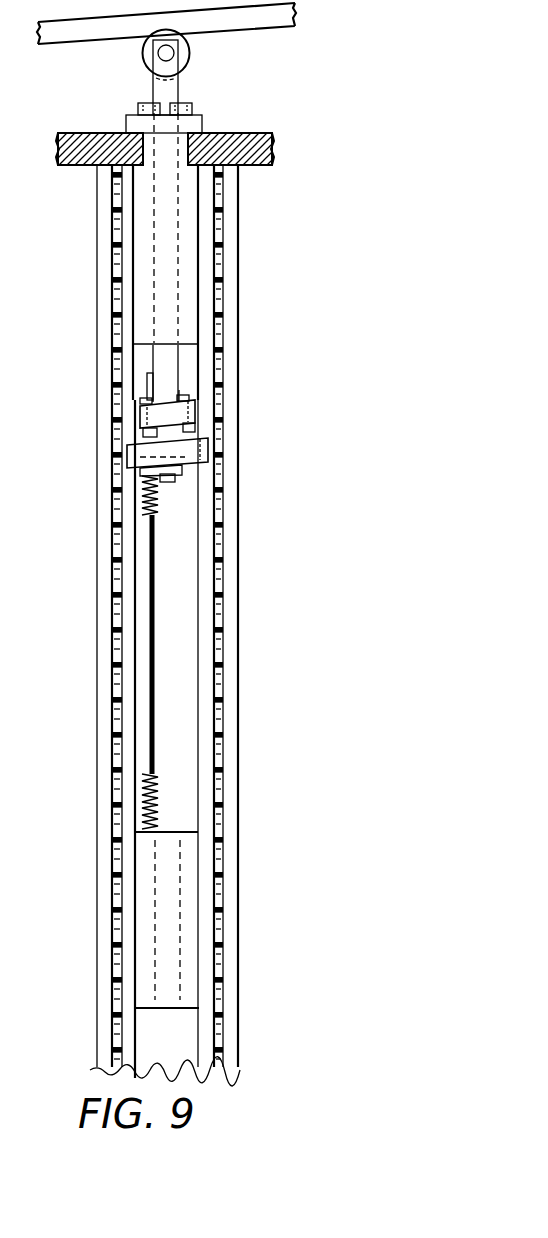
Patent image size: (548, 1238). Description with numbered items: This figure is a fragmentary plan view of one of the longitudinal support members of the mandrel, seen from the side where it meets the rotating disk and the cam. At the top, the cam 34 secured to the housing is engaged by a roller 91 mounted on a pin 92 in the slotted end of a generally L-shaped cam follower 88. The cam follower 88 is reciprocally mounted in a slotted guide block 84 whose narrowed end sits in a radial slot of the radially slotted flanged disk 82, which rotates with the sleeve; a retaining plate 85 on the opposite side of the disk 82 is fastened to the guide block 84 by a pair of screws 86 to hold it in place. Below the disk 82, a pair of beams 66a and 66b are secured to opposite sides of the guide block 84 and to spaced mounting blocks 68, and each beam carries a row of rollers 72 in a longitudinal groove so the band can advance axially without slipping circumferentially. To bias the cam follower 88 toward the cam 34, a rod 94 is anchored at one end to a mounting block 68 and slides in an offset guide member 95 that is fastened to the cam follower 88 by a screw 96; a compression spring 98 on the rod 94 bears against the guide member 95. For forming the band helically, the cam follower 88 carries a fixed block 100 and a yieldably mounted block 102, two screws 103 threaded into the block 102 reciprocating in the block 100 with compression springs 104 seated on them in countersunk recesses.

The cam 34 is at (249, 30).
The roller 91 is at (190, 52).
The pin 92 is at (164, 54).
The screws 86 is at (138, 104).
The retaining plate 85 is at (126, 123).
The radially slotted flanged disk 82 is at (272, 146).
The slotted guide block 84 is at (193, 238).
The cam follower 88 is at (176, 352).
The rod 94 is at (152, 374).
The screws 103 is at (186, 395).
The block 100 is at (195, 410).
The compression springs 104 is at (194, 430).
The block 102 is at (208, 451).
The offset guide member 95 is at (183, 470).
The screw 96 is at (168, 482).
The compression spring 98 is at (145, 492).
The rollers 72 is at (115, 582).
The beam 66a is at (238, 548).
The beam 66b is at (98, 587).
The mounting block 68 is at (184, 832).